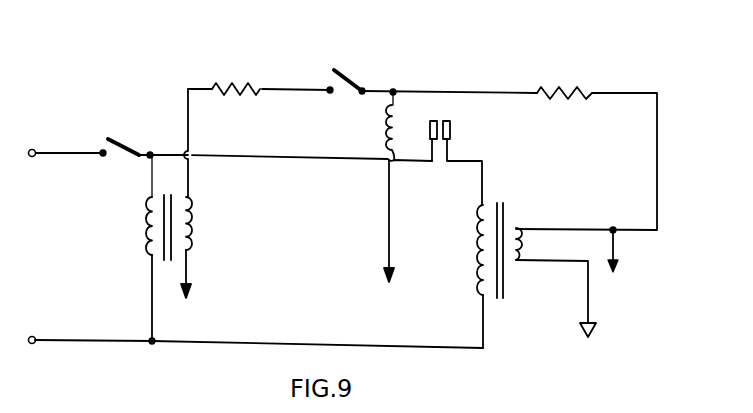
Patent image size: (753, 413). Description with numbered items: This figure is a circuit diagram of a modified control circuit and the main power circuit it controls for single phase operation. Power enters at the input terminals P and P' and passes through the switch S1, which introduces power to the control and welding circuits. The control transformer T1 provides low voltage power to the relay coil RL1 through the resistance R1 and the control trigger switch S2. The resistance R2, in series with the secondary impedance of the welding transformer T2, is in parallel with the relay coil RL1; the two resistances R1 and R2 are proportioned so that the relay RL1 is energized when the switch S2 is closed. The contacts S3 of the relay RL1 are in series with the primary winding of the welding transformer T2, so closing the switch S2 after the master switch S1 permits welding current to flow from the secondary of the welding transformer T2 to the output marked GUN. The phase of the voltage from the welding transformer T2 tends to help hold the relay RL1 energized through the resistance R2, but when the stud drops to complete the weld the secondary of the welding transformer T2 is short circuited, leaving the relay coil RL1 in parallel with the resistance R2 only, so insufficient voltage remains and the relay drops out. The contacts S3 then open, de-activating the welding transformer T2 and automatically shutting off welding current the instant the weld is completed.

The input terminal P is at (68, 138).
The input terminal P' is at (40, 326).
The switch S1 is at (126, 136).
The control transformer T1 is at (146, 250).
The resistance R1 is at (242, 78).
The control trigger switch S2 is at (349, 80).
The relay coil RL1 is at (384, 131).
The relay contacts S3 is at (457, 128).
The welding transformer T2 is at (478, 265).
The resistance R2 is at (578, 84).
The gun output GUN is at (635, 255).